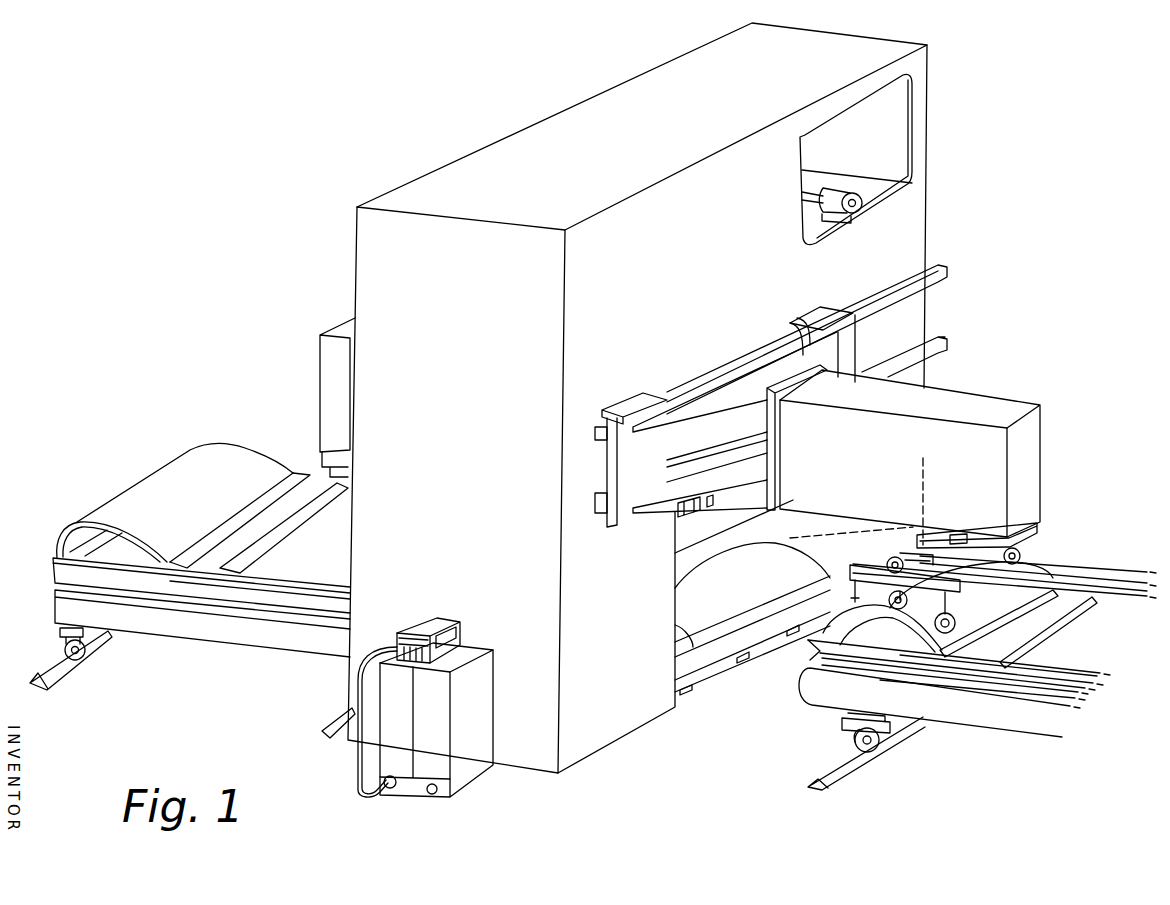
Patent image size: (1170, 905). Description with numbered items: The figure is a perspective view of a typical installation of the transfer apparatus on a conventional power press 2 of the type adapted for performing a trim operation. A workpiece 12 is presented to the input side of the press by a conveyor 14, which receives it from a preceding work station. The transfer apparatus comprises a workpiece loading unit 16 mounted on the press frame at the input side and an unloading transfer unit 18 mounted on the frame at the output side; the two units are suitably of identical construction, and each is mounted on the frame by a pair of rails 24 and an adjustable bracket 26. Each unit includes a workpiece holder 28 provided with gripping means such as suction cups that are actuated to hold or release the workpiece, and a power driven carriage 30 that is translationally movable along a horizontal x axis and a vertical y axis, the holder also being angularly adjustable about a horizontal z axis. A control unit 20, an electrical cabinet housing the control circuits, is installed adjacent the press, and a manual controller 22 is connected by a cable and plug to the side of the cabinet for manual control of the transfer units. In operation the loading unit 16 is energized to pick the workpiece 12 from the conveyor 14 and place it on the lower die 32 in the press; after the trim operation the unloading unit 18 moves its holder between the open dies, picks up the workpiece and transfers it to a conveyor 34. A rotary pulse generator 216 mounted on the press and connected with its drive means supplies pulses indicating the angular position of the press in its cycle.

The power press 2 is at (508, 137).
The rotary pulse generator 216 is at (832, 190).
The workpiece loading unit 16 is at (320, 362).
The workpiece 12 is at (198, 446).
The conveyor 14 is at (190, 628).
The control unit 20 is at (465, 756).
The manual controller 22 is at (460, 632).
The rails 24 is at (947, 342).
The adjustable bracket 26 is at (713, 395).
The unloading transfer unit 18 is at (1003, 408).
The power driven carriage 30 is at (950, 545).
The workpiece holder 28 is at (867, 563).
The lower die 32 is at (685, 648).
The conveyor 34 is at (927, 713).